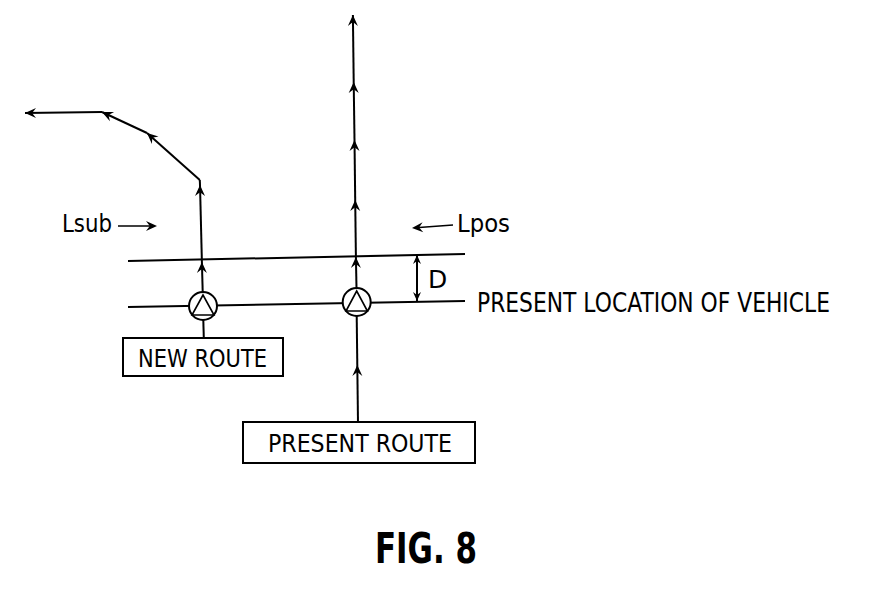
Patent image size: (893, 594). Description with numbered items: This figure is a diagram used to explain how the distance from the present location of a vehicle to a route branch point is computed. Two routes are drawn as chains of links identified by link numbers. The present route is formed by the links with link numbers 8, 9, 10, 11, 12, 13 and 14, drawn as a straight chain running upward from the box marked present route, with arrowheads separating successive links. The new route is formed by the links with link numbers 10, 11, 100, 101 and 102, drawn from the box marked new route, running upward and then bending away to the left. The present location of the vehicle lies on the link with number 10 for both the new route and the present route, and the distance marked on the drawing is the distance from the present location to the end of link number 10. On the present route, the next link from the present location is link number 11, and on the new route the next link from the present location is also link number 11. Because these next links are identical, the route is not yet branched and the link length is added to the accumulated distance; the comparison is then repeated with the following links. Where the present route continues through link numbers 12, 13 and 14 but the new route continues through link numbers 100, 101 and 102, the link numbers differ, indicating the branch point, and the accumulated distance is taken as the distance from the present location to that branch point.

The link number 8 is at (378, 394).
The link number 9 is at (380, 340).
The link number 10 is at (285, 297).
The link number 11 is at (282, 223).
The link number 12 is at (377, 170).
The link number 13 is at (376, 111).
The link number 14 is at (376, 48).
The link number 100 is at (164, 159).
The link number 101 is at (116, 132).
The link number 102 is at (62, 130).